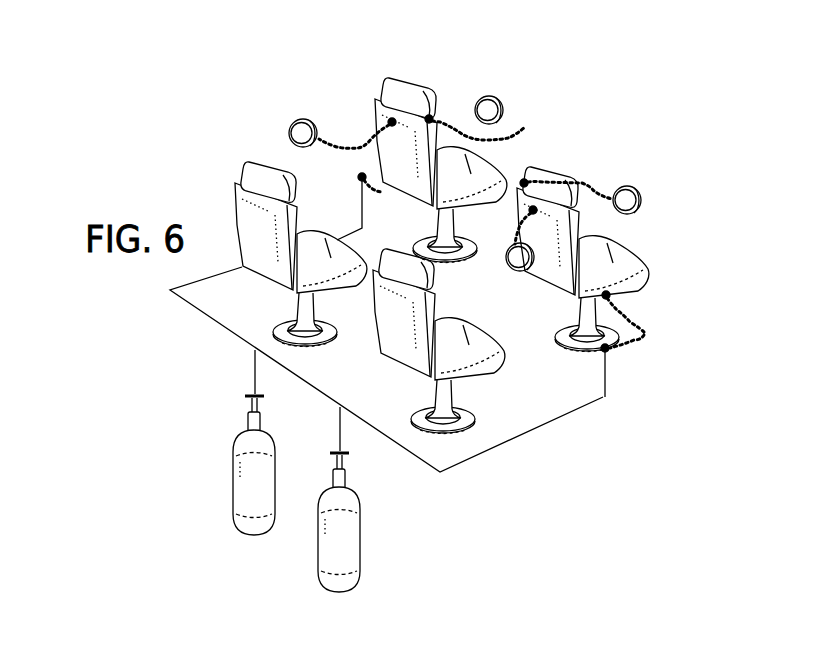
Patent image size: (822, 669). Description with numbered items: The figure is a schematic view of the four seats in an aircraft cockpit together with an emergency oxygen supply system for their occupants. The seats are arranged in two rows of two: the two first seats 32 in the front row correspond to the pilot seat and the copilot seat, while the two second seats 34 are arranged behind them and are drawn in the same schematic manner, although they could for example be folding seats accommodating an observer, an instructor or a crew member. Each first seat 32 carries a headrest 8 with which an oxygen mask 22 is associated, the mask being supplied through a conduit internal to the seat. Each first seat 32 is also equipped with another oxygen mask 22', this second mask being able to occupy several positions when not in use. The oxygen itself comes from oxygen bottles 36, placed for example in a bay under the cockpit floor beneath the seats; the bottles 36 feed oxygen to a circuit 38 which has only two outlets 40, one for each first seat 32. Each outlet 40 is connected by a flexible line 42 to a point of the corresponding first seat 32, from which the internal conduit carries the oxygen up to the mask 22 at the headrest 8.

The headrest 8 is at (392, 78).
The oxygen mask 22 is at (554, 131).
The second oxygen mask 22' is at (400, 200).
The first seat 32 is at (477, 188).
The second seat 34 is at (400, 348).
The oxygen bottle 36 is at (240, 479).
The circuit 38 is at (475, 459).
The outlet 40 is at (356, 177).
The flexible line 42 is at (373, 192).